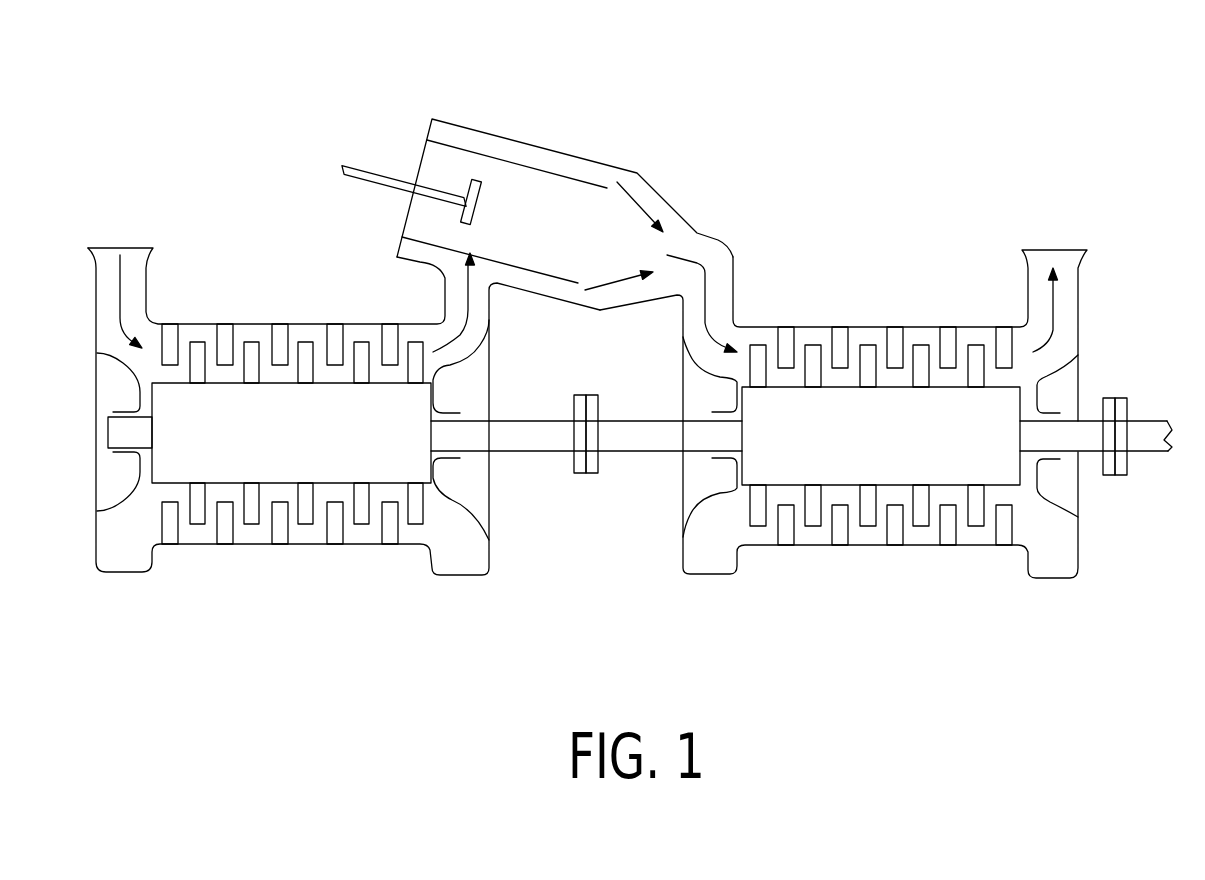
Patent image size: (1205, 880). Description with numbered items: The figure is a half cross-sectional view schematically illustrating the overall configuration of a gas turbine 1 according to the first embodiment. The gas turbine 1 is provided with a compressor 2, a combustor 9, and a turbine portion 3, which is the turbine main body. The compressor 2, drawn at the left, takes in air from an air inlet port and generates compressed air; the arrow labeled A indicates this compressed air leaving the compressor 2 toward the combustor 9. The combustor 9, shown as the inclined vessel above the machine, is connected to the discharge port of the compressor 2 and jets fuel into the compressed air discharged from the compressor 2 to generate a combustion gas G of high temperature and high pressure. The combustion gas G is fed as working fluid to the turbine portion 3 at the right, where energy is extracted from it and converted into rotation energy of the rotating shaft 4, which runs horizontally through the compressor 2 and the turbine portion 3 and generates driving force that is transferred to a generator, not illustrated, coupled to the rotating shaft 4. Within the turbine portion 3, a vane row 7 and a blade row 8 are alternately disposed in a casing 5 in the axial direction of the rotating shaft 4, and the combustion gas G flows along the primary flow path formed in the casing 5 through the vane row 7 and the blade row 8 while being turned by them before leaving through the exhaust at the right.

The gas turbine 1 is at (815, 68).
The compressor 2 is at (302, 548).
The turbine portion 3 is at (949, 557).
The rotating shaft 4 is at (633, 452).
The casing 5 is at (878, 326).
The vane row 7 is at (786, 333).
The blade row 8 is at (813, 376).
The combustor 9 is at (598, 157).
The compressed air flow A is at (443, 296).
The combustion gas G is at (707, 254).